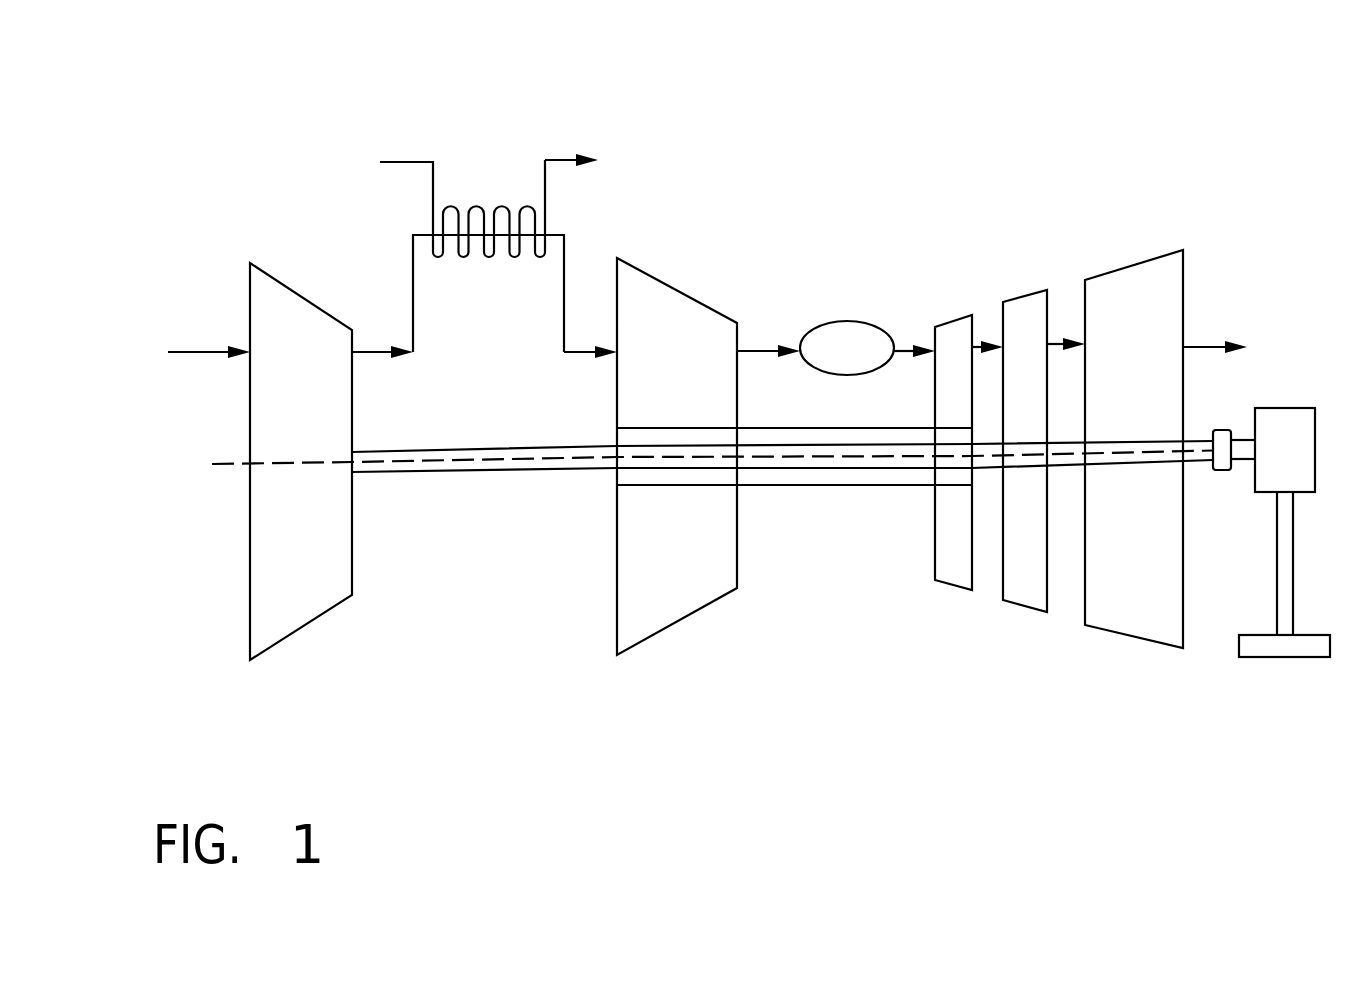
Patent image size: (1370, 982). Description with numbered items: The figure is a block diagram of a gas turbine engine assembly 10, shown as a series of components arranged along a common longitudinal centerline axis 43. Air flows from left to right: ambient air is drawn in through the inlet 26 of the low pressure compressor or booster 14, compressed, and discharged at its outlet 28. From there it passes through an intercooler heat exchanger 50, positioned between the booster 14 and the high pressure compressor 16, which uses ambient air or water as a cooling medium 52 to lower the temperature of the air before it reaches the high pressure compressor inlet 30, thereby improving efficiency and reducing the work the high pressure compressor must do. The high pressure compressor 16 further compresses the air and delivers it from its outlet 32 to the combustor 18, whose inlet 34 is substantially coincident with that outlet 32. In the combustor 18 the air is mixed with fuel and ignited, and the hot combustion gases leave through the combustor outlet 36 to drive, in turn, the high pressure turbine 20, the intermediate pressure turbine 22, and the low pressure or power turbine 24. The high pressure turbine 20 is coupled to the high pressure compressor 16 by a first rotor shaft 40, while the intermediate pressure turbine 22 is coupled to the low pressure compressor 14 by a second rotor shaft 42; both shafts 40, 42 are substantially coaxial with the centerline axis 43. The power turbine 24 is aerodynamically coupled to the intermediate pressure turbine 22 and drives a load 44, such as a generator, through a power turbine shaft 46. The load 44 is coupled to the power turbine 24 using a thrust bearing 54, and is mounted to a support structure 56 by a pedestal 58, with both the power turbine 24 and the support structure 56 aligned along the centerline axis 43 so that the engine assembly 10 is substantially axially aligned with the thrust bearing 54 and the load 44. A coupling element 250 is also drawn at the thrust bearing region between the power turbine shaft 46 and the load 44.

The gas turbine engine assembly 10 is at (483, 98).
The low pressure compressor or booster 14 is at (330, 598).
The high pressure compressor 16 is at (683, 605).
The combustor 18 is at (851, 335).
The high pressure turbine 20 is at (960, 570).
The intermediate pressure turbine 22 is at (1030, 592).
The low pressure or power turbine 24 is at (1152, 628).
The inlet 26 is at (200, 352).
The outlet 28 is at (370, 352).
The inlet 30 is at (582, 353).
The outlet 32 is at (765, 350).
The inlet 34 is at (797, 348).
The outlet 36 is at (893, 345).
The first rotor shaft 40 is at (812, 485).
The second rotor shaft 42 is at (385, 472).
The longitudinal centerline axis 43 is at (245, 462).
The load 44 is at (1268, 461).
The power turbine shaft 46 is at (1193, 459).
The intercooler heat exchanger 50 is at (565, 268).
The cooling medium 52 is at (552, 158).
The thrust bearing 54 is at (1218, 430).
The support structure 56 is at (1277, 565).
The pedestal 58 is at (1262, 657).
The coupling 250 is at (1222, 438).